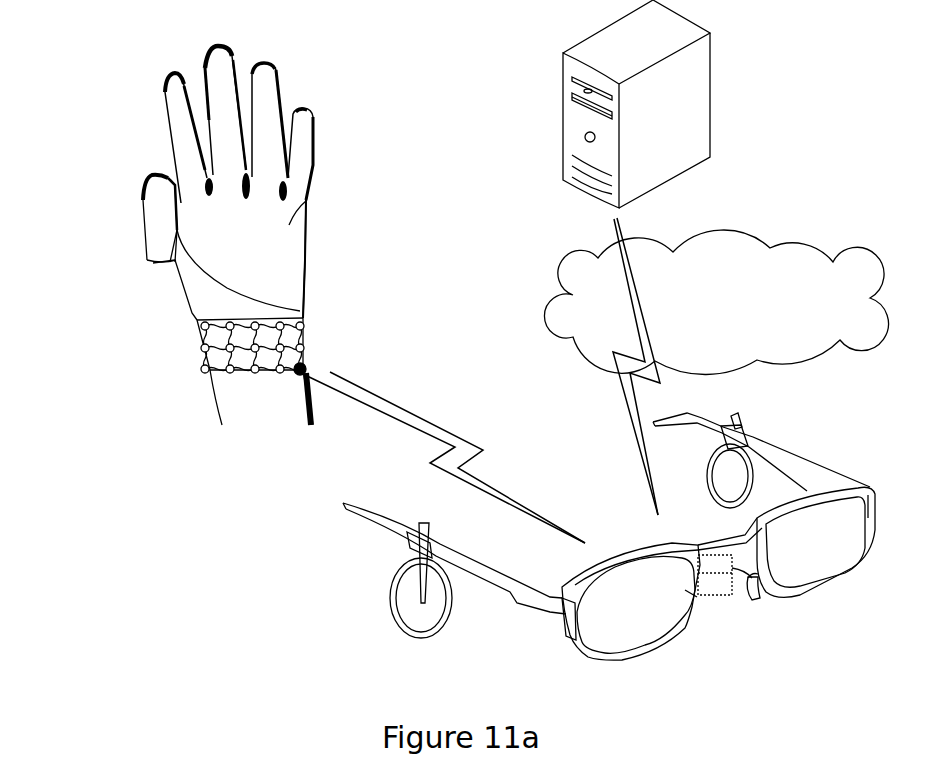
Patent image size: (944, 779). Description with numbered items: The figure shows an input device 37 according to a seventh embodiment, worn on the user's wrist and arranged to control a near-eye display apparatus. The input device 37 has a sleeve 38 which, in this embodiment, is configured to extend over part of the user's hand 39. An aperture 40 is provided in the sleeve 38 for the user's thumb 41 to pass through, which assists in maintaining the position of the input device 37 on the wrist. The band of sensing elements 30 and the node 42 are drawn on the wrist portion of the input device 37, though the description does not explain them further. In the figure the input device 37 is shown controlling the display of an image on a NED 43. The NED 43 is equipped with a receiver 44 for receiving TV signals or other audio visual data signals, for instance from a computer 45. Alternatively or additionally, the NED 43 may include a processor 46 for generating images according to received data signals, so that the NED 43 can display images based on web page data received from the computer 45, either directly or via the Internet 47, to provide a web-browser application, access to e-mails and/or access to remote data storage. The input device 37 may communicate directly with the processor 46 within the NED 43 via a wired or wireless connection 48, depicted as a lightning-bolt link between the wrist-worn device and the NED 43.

The sensor array band 30 is at (312, 351).
The input device 37 is at (150, 361).
The sleeve 38 is at (302, 313).
The user's hand 39 is at (307, 200).
The aperture 40 is at (153, 263).
The thumb 41 is at (148, 200).
The transmitter node 42 is at (304, 371).
The NED 43 is at (313, 562).
The receiver 44 is at (713, 596).
The computer 45 is at (710, 43).
The processor 46 is at (752, 582).
The Internet 47 is at (725, 233).
The wired or wireless connection 48 is at (460, 435).